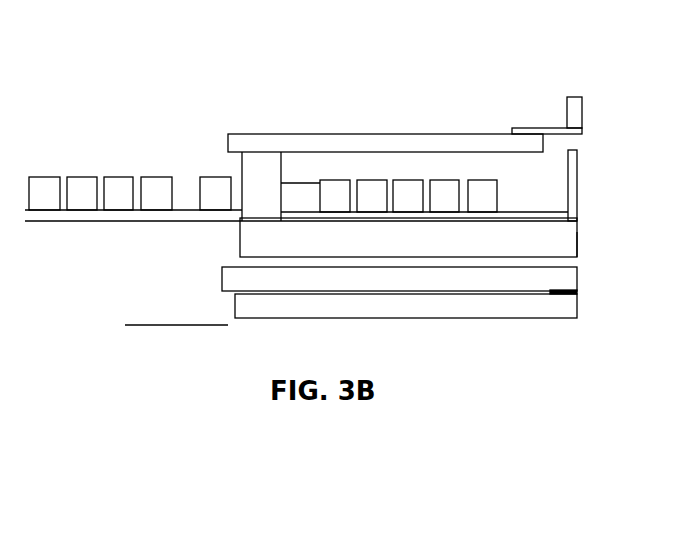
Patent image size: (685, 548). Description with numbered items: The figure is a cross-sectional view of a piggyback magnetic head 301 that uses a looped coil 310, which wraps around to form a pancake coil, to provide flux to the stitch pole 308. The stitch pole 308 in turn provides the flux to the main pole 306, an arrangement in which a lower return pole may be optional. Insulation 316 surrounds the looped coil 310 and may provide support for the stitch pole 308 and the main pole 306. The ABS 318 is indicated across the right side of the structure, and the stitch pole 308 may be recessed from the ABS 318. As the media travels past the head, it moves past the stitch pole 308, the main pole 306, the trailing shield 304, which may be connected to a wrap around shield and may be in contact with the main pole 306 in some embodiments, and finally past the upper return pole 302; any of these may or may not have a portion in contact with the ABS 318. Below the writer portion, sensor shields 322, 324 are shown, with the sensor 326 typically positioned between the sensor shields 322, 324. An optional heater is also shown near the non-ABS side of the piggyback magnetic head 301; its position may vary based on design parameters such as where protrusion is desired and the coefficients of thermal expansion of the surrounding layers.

The piggyback magnetic head 301 is at (267, 80).
The upper return pole 302 is at (583, 108).
The trailing shield 304 is at (580, 192).
The main pole 306 is at (547, 128).
The stitch pole 308 is at (412, 134).
The looped coil 310 is at (480, 178).
The insulation 316 is at (460, 253).
The ABS 318 is at (586, 240).
The sensor shield 322 is at (222, 280).
The sensor shield 324 is at (235, 300).
The sensor 326 is at (568, 290).